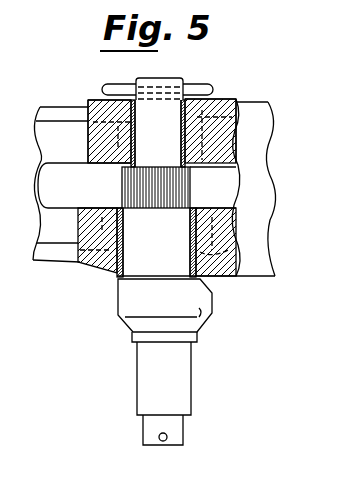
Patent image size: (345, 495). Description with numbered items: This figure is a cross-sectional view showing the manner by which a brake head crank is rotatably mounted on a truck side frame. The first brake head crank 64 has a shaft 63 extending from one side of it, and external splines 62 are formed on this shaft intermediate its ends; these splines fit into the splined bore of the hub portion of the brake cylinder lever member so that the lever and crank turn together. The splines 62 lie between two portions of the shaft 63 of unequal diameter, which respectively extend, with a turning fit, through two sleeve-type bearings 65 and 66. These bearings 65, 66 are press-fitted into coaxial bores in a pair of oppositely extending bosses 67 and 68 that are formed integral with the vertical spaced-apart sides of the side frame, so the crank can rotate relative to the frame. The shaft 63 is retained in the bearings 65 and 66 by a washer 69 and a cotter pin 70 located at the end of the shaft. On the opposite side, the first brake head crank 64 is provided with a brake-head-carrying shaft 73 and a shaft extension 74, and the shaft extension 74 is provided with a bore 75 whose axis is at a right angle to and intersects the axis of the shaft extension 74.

The external splines 62 is at (178, 188).
The shaft 63 is at (140, 261).
The first brake head crank 64 is at (212, 302).
The sleeve-type bearing 65 is at (103, 272).
The sleeve-type bearing 66 is at (113, 110).
The boss 67 is at (110, 227).
The boss 68 is at (113, 140).
The washer 69 is at (216, 105).
The cotter pin 70 is at (103, 86).
The brake-head-carrying shaft 73 is at (180, 383).
The shaft extension 74 is at (178, 428).
The bore 75 is at (163, 442).